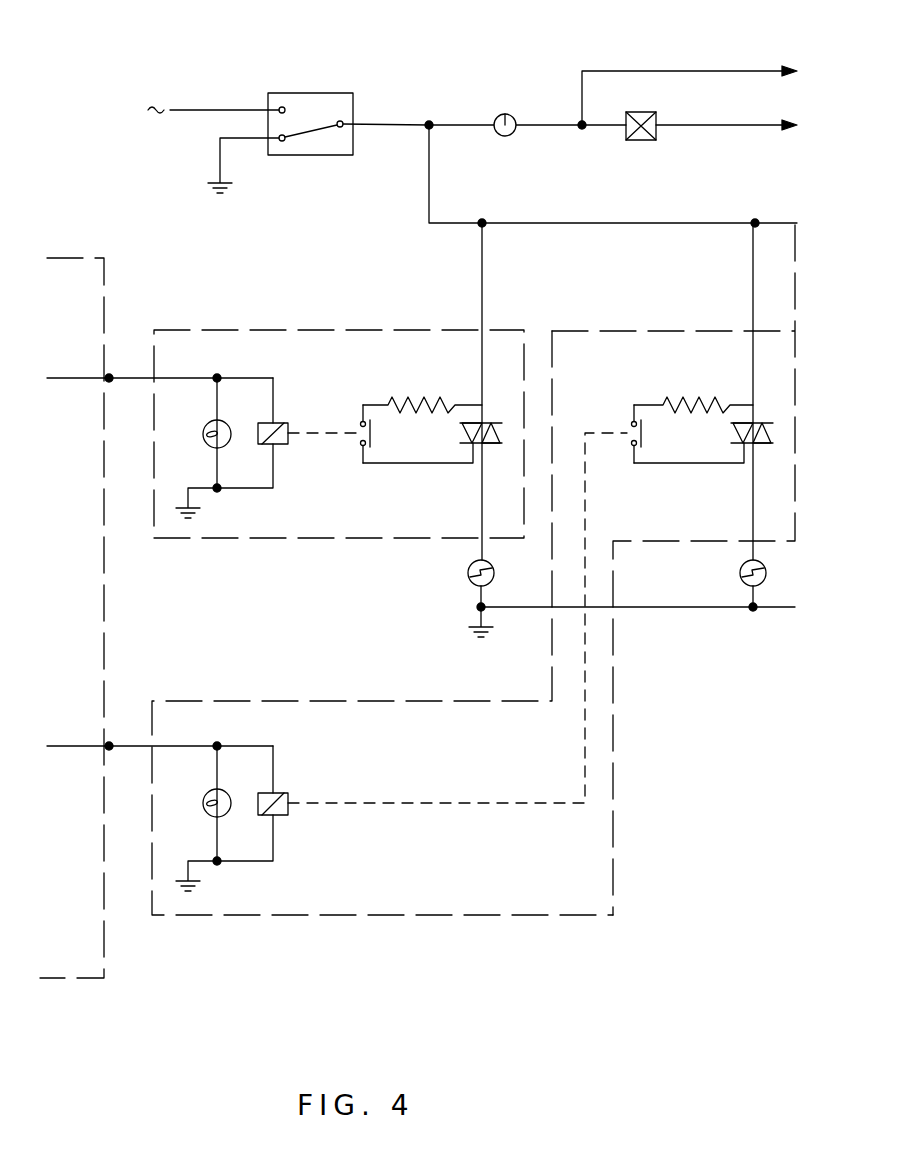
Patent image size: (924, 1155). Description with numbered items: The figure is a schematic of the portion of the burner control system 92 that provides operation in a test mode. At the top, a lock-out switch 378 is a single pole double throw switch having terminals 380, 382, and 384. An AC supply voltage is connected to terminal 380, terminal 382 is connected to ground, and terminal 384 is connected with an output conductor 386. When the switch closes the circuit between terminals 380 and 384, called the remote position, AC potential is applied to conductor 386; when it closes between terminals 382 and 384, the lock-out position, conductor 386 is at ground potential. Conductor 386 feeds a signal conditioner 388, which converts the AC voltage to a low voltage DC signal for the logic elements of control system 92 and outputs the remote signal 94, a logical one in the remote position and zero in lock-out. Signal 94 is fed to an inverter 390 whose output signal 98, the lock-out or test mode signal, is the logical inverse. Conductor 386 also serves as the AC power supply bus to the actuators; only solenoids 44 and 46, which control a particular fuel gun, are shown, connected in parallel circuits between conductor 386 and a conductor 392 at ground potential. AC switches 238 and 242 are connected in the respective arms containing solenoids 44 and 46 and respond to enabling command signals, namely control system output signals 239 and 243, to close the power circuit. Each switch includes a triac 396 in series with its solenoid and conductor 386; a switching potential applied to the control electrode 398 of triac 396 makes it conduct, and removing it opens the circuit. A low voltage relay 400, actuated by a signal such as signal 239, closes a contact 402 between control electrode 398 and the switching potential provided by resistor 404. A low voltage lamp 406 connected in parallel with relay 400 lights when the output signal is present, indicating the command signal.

The terminal 380 is at (282, 106).
The lock-out switch 378 is at (275, 121).
The terminal 382 is at (281, 145).
The terminal 384 is at (345, 130).
The output conductor 386 is at (370, 123).
The signal conditioner 388 is at (506, 114).
The inverter 390 is at (652, 113).
The remote signal 94 is at (667, 70).
The lock-out signal 98 is at (670, 128).
The control system 92 is at (95, 312).
The control system output signal 239 is at (132, 378).
The control system output signal 243 is at (130, 746).
The AC switch 238 is at (368, 341).
The AC switch 242 is at (363, 673).
The low voltage lamp 406 is at (215, 420).
The low voltage relay 400 is at (279, 423).
The resistor 404 is at (421, 404).
The contact 402 is at (372, 434).
The control electrode 398 is at (386, 464).
The triac 396 is at (491, 447).
The solenoid 44 is at (468, 576).
The solenoid 46 is at (740, 576).
The conductor 392 is at (767, 607).